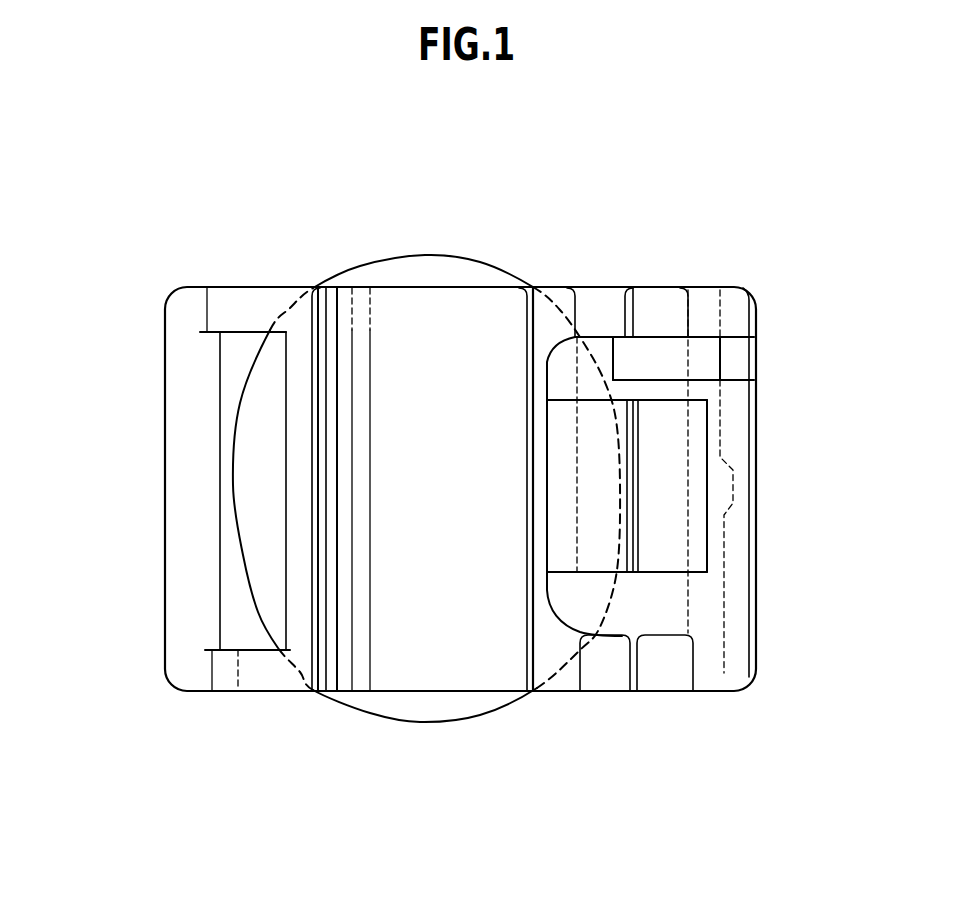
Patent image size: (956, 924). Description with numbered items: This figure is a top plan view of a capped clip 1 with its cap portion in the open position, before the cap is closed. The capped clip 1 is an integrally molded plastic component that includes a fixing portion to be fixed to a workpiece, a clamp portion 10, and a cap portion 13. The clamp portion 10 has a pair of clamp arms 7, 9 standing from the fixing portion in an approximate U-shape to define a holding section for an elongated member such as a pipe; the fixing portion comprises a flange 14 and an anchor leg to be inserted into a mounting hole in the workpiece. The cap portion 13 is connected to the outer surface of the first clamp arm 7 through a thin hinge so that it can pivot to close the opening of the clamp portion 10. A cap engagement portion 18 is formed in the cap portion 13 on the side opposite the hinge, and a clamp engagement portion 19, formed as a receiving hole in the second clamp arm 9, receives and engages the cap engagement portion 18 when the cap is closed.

The capped clip 1 is at (762, 333).
The first clamp arm 7 is at (540, 443).
The second clamp arm 9 is at (307, 441).
The clamp portion 10 is at (506, 428).
The cap portion 13 is at (765, 608).
The flange 14 is at (332, 697).
The cap engagement portion 18 is at (588, 368).
The clamp engagement portion 19 is at (232, 392).